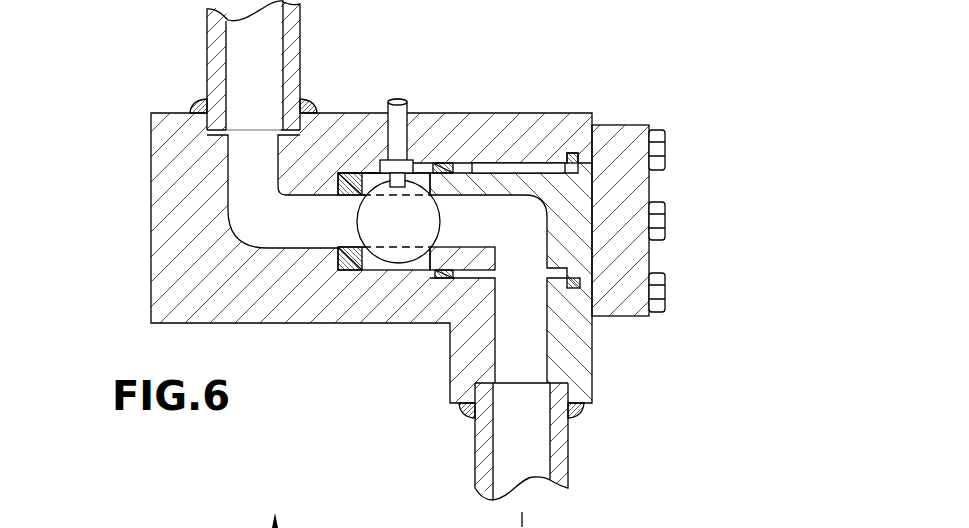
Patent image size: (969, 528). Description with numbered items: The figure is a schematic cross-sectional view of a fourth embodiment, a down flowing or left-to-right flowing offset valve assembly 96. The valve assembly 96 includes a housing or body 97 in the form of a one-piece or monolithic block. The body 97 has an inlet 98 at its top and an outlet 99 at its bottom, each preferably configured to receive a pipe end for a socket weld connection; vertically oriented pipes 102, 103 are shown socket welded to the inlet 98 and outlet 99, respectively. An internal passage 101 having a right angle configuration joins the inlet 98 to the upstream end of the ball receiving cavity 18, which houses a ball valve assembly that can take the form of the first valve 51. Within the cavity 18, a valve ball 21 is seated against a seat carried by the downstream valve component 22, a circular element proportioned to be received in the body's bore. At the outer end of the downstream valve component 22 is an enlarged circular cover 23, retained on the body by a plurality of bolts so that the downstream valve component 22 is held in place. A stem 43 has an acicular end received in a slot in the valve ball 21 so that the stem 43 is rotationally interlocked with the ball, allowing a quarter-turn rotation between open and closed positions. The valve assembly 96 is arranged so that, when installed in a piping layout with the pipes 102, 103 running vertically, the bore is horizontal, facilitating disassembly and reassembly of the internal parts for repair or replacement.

The valve ball receiving cavity 18 is at (419, 262).
The valve ball 21 is at (381, 266).
The downstream valve component 22 is at (545, 172).
The cover 23 is at (623, 125).
The stem 43 is at (406, 104).
The first valve 51 is at (441, 142).
The offset valve assembly 96 is at (472, 84).
The housing or body 97 is at (151, 267).
The inlet 98 is at (280, 151).
The outlet 99 is at (547, 366).
The internal passage 101 is at (292, 241).
The pipe 102 is at (206, 56).
The pipe 103 is at (568, 448).